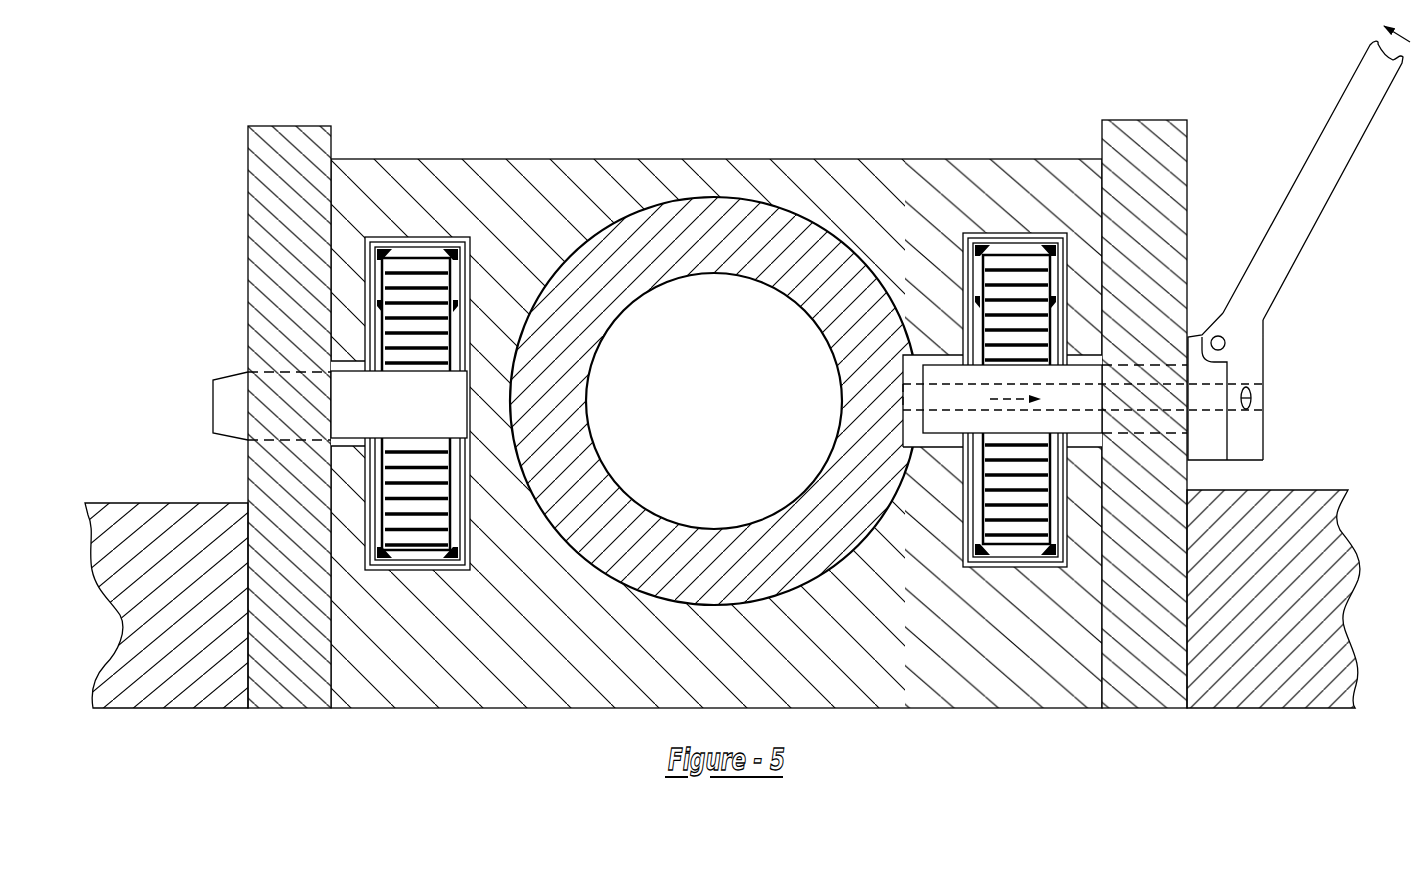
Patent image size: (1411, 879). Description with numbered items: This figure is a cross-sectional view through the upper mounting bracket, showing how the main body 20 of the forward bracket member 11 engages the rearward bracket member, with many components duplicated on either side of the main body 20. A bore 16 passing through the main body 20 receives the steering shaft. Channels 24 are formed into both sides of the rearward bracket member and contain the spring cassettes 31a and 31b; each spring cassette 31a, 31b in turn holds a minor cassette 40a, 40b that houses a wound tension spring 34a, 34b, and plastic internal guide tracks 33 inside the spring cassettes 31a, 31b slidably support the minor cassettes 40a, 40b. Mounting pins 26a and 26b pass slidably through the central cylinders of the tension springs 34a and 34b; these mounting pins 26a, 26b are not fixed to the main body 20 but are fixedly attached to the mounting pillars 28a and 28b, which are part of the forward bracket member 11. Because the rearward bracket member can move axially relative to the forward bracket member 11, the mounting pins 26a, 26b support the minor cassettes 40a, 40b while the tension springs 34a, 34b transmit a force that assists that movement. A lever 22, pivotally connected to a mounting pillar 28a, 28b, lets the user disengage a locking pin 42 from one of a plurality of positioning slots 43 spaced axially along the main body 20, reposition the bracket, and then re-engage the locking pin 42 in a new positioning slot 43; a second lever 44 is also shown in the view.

The forward bracket member 11 is at (1340, 525).
The bore 16 is at (763, 287).
The main body 20 is at (643, 210).
The lever 22 is at (1306, 222).
The channels 24 is at (1065, 260).
The mounting pin 26a is at (220, 400).
The mounting pin 26b is at (1087, 425).
The mounting pillar 28a is at (272, 136).
The mounting pillar 28b is at (1160, 130).
The spring cassette 31a is at (408, 555).
The spring cassette 31b is at (1045, 562).
The plastic internal guide tracks 33 is at (410, 305).
The tension spring 34a is at (393, 257).
The tension spring 34b is at (1020, 273).
The minor cassette 40a is at (417, 250).
The minor cassette 40b is at (1005, 252).
The locking pin 42 is at (1203, 402).
The positioning slots 43 is at (902, 403).
The lever 44 is at (1212, 446).